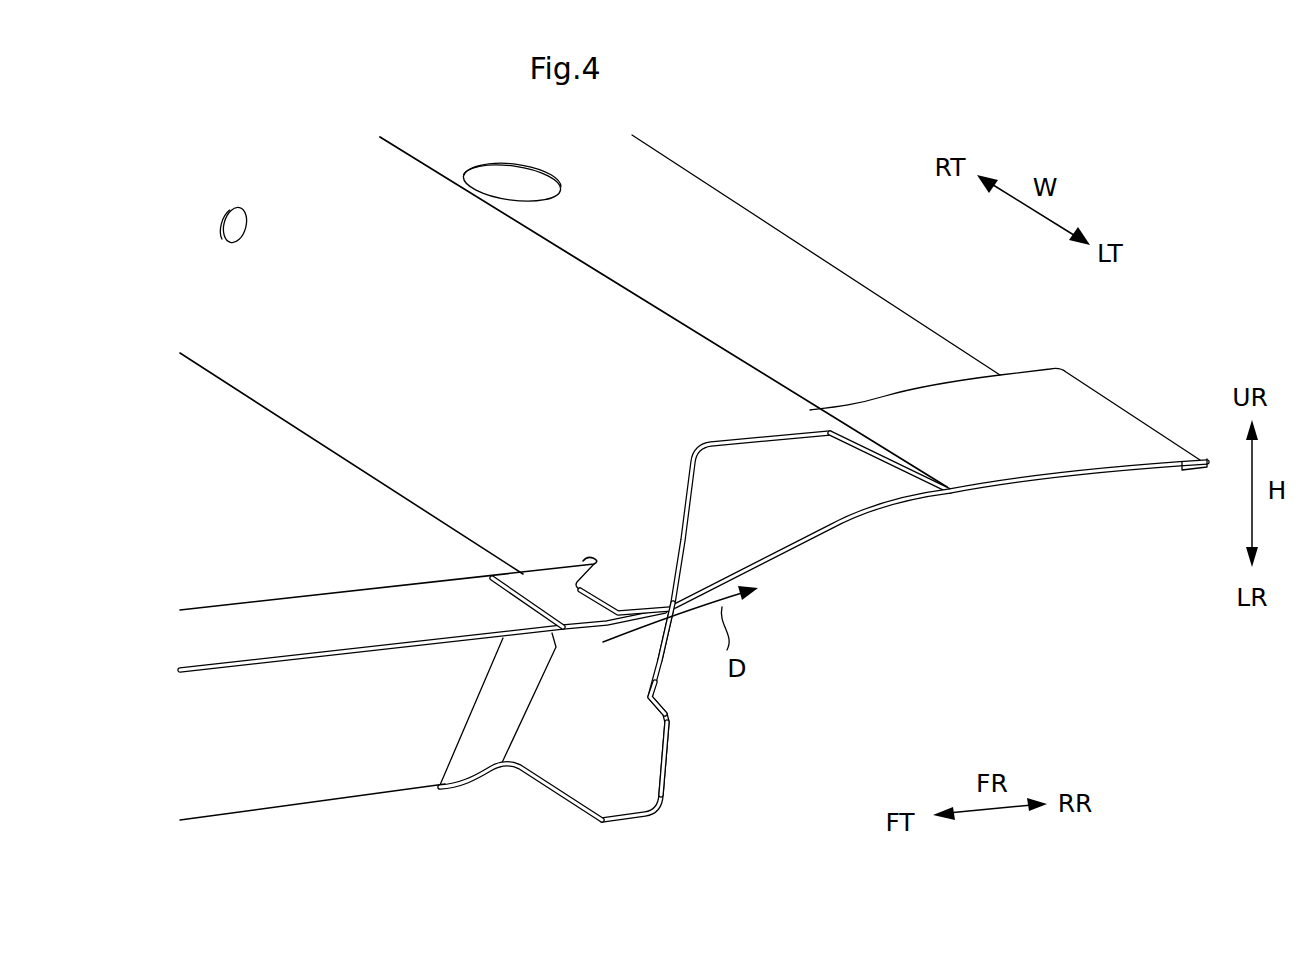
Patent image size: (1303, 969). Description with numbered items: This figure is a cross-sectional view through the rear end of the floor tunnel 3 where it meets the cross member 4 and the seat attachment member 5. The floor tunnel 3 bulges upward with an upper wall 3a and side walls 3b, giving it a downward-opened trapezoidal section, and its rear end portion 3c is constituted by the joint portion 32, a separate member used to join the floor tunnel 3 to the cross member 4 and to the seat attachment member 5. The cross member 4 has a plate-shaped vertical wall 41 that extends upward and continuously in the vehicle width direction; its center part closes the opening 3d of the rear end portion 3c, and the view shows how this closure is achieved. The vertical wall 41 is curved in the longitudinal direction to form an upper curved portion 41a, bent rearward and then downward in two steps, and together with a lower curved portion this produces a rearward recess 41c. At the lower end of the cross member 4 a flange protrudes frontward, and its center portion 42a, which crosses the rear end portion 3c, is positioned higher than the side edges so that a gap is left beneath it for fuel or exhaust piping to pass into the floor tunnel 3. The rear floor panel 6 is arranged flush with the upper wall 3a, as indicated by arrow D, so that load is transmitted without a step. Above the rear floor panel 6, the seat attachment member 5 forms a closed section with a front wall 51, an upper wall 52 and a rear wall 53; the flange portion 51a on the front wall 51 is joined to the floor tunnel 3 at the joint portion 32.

The floor tunnel 3 is at (422, 648).
The upper wall 3a is at (355, 605).
The side wall 3b is at (283, 778).
The rear end portion 3c is at (559, 548).
The opening 3d is at (494, 708).
The joint portion 32 is at (537, 578).
The cross member 4 is at (627, 724).
The vertical wall 41 is at (677, 785).
The curved portion 41a is at (667, 708).
The rearward recess 41c is at (667, 753).
The center portion 42a is at (545, 790).
The seat attachment member 5 is at (582, 294).
The front wall 51 is at (695, 495).
The flange portion 51a is at (610, 590).
The upper wall 52 is at (673, 357).
The rear wall 53 is at (887, 464).
The rear floor panel 6 is at (833, 527).